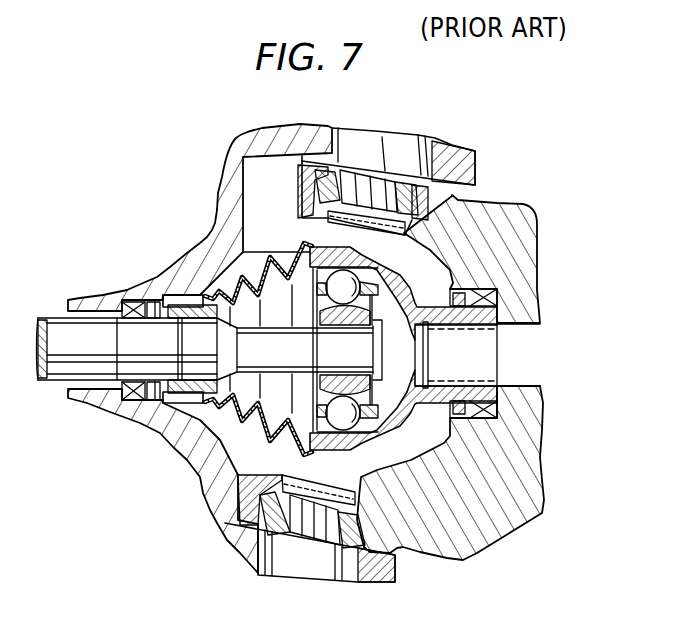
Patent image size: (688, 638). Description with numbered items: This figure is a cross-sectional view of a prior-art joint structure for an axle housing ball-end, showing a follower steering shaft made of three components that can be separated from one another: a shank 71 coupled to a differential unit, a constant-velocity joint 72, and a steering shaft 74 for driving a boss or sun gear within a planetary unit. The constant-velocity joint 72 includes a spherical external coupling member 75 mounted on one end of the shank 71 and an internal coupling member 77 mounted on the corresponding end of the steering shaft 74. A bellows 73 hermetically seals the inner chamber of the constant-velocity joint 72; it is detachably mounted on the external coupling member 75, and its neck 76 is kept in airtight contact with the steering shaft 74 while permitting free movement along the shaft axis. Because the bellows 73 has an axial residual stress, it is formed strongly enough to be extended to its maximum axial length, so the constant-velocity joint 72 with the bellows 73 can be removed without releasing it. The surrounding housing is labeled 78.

The shank 71 is at (529, 360).
The constant-velocity joint 72 is at (289, 249).
The bellows 73 is at (197, 461).
The steering shaft 74 is at (60, 367).
The spherical external coupling member 75 is at (411, 280).
The neck 76 is at (190, 400).
The internal coupling member 77 is at (362, 400).
The housing 78 is at (510, 232).